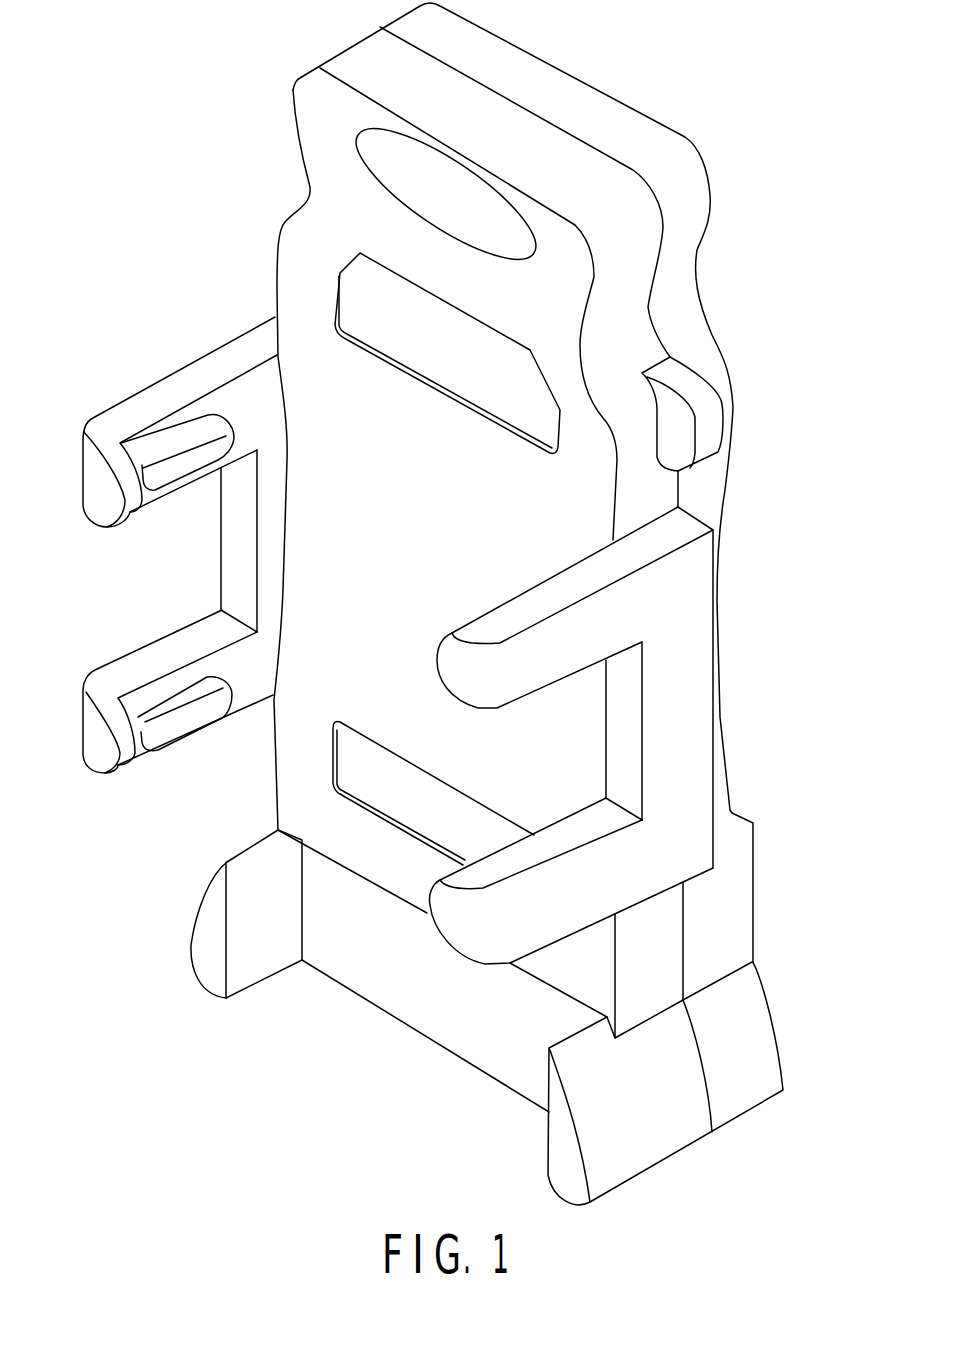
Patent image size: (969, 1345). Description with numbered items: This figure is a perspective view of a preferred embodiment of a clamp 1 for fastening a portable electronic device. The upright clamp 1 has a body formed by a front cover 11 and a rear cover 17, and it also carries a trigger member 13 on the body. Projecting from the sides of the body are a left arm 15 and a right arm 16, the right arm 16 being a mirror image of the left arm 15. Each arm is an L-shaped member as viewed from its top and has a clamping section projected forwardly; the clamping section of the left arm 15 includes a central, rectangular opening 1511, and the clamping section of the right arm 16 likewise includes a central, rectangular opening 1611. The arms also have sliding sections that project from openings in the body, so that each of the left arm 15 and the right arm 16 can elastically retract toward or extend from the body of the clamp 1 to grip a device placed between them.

The clamp 1 is at (752, 358).
The front cover 11 is at (290, 105).
The trigger member 13 is at (712, 435).
The left arm 15 is at (713, 605).
The rectangular opening 1511 is at (573, 748).
The right arm 16 is at (183, 365).
The rectangular opening 1611 is at (207, 585).
The rear cover 17 is at (713, 163).